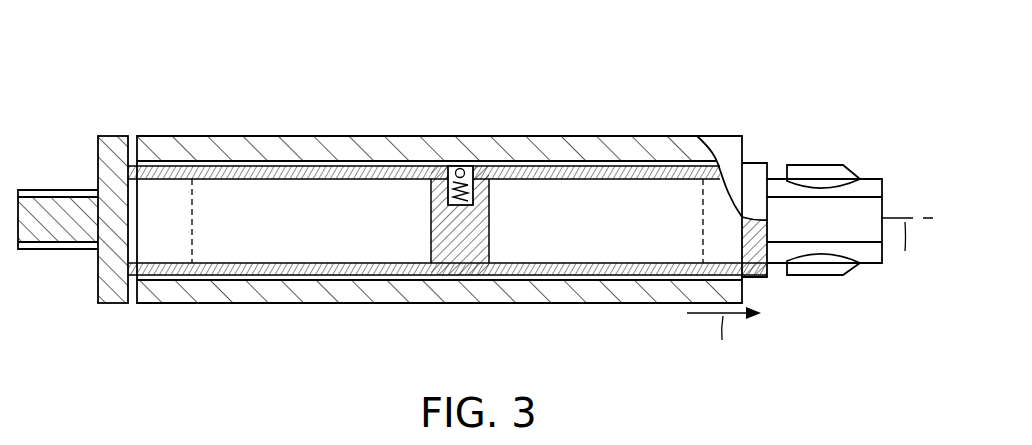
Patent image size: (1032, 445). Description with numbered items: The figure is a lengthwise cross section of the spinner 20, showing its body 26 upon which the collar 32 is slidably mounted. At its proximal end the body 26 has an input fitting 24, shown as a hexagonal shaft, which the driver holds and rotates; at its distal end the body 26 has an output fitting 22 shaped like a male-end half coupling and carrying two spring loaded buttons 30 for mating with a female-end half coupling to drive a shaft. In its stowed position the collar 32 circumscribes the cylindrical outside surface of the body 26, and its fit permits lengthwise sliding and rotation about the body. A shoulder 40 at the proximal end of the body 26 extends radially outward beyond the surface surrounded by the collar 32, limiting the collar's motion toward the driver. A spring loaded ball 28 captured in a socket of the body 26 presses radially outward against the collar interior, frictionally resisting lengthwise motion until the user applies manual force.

The spinner 20 is at (562, 58).
The output fitting 22 is at (869, 172).
The input fitting 24 is at (55, 189).
The body 26 is at (157, 184).
The spring loaded ball 28 is at (459, 168).
The spring loaded buttons 30 is at (822, 164).
The collar 32 is at (237, 145).
The shoulder 40 is at (113, 135).